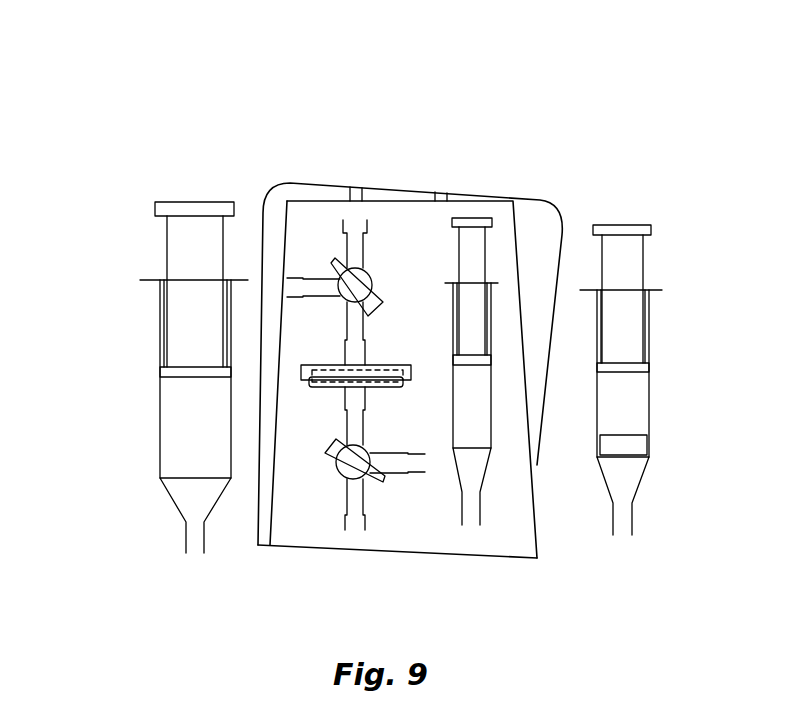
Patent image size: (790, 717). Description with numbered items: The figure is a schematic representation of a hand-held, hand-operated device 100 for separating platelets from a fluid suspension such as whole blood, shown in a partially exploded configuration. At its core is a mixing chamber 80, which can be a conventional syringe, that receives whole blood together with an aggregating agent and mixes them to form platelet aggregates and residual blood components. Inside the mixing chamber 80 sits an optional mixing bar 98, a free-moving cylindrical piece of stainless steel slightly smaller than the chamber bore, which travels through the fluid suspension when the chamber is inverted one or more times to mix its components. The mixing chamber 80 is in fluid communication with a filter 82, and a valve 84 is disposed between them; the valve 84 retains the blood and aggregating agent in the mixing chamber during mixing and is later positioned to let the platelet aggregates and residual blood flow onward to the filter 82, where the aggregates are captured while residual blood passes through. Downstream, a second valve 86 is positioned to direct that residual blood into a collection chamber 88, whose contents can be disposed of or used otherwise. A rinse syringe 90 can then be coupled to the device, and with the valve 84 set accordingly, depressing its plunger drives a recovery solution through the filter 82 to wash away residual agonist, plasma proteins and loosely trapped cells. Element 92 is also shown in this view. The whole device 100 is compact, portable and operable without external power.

The device 100 is at (105, 138).
The mixing chamber 80 is at (649, 392).
The filter 82 is at (305, 392).
The valve 84 is at (372, 267).
The second valve 86 is at (340, 472).
The collection chamber 88 is at (535, 515).
The rinse syringe 90 is at (160, 422).
The syringe outlet 92 is at (490, 413).
The mixing bar 98 is at (640, 443).